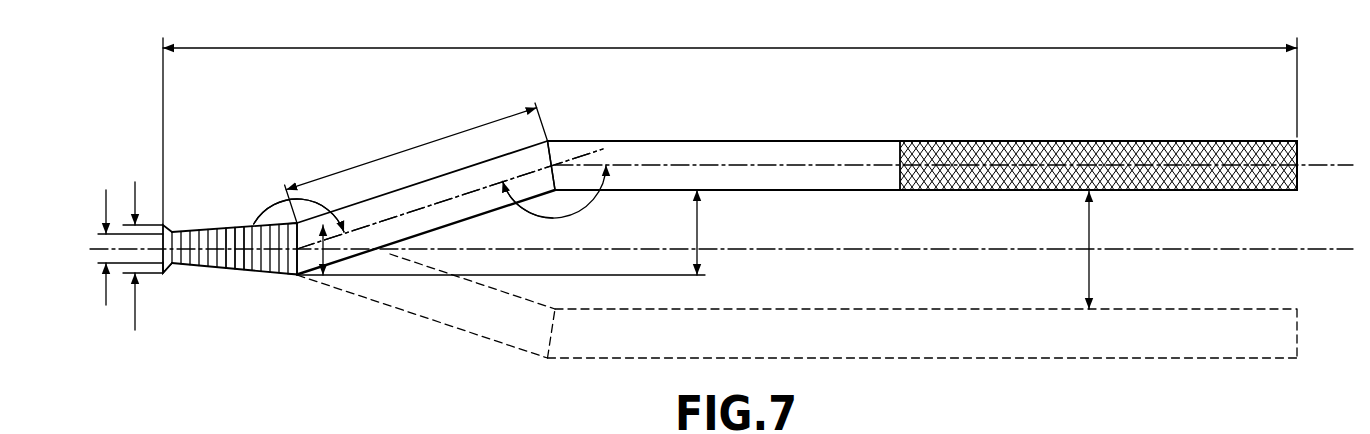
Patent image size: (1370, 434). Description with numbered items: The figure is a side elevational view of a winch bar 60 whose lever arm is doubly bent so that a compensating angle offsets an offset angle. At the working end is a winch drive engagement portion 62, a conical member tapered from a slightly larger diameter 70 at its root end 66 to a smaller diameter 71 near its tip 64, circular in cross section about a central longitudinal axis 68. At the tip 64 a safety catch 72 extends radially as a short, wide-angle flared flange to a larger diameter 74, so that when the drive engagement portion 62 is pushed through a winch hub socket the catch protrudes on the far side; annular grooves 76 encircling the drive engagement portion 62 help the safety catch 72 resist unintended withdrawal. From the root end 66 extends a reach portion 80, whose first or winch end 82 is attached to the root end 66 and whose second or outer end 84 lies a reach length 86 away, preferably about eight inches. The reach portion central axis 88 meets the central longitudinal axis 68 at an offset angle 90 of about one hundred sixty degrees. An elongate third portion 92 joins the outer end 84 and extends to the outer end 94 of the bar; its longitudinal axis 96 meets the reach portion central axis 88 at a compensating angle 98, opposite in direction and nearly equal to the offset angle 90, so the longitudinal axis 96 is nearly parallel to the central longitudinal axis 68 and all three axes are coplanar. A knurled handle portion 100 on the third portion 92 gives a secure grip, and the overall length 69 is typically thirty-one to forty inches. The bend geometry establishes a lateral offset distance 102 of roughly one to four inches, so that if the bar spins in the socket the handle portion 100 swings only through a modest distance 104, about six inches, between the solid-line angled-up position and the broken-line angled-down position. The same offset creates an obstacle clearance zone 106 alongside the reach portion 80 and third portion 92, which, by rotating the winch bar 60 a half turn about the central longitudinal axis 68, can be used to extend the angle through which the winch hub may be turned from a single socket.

The winch bar 60 is at (882, 138).
The winch drive engagement portion 62 is at (234, 272).
The tip 64 is at (171, 229).
The root end 66 is at (266, 209).
The central longitudinal axis 68 is at (88, 249).
The overall length 69 is at (803, 48).
The diameter at root end 70 is at (343, 260).
The diameter near tip 71 is at (106, 190).
The safety catch 72 is at (167, 273).
The diameter of safety catch 74 is at (135, 330).
The annular grooves 76 is at (246, 242).
The reach portion 80 is at (376, 193).
The first end of reach portion 82 is at (293, 276).
The second end of reach portion 84 is at (550, 139).
The reach length 86 is at (417, 146).
The reach portion central axis 88 is at (478, 189).
The offset angle 90 is at (338, 224).
The elongate third portion 92 is at (809, 140).
The outer end of winch bar 94 is at (1297, 178).
The longitudinal axis of third portion 96 is at (706, 165).
The compensating angle 98 is at (591, 202).
The handle portion 100 is at (1173, 140).
The lateral offset distance 102 is at (700, 226).
The distance of handle movement 104 is at (1091, 225).
The obstacle clearance zone 106 is at (552, 218).